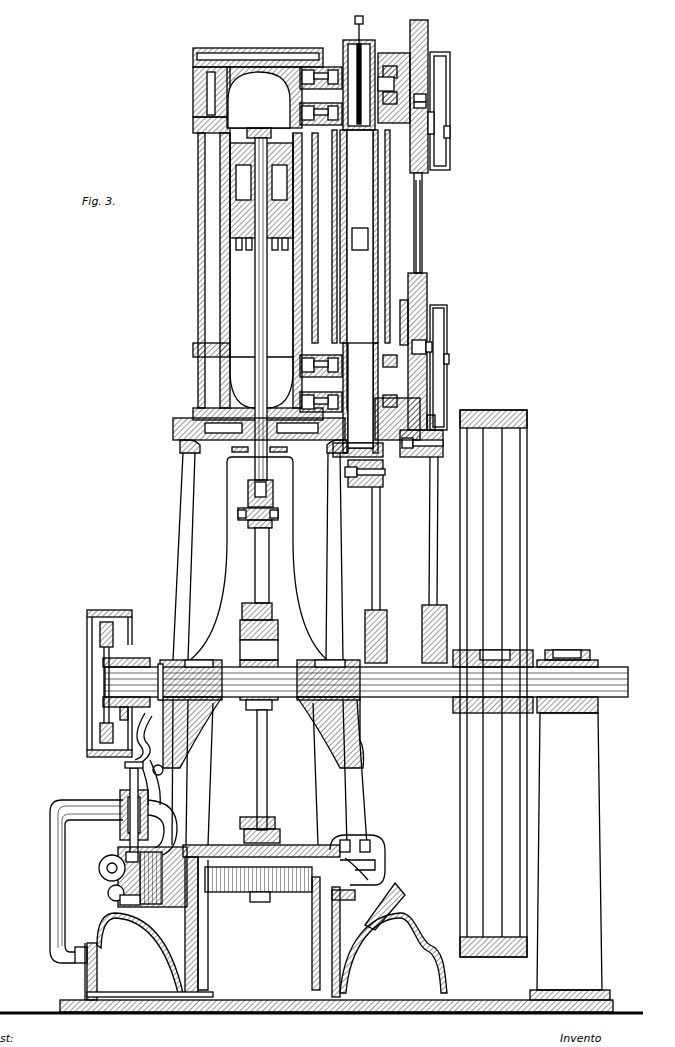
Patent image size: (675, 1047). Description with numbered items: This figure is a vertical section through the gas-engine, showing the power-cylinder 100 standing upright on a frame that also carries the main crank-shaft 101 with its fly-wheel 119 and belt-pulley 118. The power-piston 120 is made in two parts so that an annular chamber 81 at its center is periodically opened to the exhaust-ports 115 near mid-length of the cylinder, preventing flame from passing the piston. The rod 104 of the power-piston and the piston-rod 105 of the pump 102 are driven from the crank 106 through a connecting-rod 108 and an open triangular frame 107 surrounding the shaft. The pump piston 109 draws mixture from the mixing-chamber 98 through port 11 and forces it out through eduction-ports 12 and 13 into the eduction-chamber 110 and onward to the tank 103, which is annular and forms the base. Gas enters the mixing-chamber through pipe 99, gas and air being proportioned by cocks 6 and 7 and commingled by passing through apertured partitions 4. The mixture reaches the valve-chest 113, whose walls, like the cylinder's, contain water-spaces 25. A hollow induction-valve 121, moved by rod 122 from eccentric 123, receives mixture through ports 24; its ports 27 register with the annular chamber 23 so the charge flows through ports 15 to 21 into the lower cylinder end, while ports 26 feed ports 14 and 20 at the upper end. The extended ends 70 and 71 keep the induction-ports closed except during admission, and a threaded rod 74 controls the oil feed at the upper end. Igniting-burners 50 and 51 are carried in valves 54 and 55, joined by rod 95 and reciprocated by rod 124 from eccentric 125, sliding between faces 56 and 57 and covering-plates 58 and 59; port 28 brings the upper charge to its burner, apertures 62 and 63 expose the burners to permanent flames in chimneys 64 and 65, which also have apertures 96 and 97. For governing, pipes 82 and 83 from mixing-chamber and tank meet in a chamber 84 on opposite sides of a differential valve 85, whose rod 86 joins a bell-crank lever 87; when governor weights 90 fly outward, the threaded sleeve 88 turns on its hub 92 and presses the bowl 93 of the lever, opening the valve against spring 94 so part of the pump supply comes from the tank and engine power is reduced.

The diaphragms or partitions 4 is at (135, 907).
The cock or valve 6 is at (100, 868).
The cock or valve 7 is at (108, 893).
The port 11 is at (385, 906).
The eduction-port 12 is at (320, 845).
The eduction-port 13 is at (356, 866).
The port 14 is at (321, 107).
The port 15 is at (321, 396).
The induction-port 20 is at (321, 85).
The induction-port 21 is at (321, 374).
The annular chamber 23 is at (360, 396).
The ports 24 is at (361, 236).
The water-spaces 25 is at (262, 48).
The ports 26 is at (360, 124).
The ports 27 is at (357, 359).
The port 28 is at (386, 84).
The igniting-burner 50 is at (426, 98).
The igniting-burner 51 is at (426, 345).
The igniting valve 54 is at (428, 34).
The igniting valve 55 is at (427, 282).
The face 56 is at (395, 53).
The face 57 is at (427, 302).
The covering-plate 58 is at (438, 56).
The covering-plate 59 is at (445, 398).
The aperture 62 is at (434, 118).
The aperture 63 is at (432, 347).
The chimney 64 is at (446, 104).
The chimney 65 is at (447, 320).
The end of the induction-valve 70 is at (352, 50).
The end of the induction-valve 71 is at (358, 400).
The threaded rod 74 is at (361, 20).
The annular chamber 81 is at (261, 182).
The pipe 82 is at (178, 832).
The pipe 83 is at (50, 876).
The chamber 84 is at (130, 778).
The differential valve 85 is at (120, 793).
The rod 86 is at (125, 765).
The bell-crank lever 87 is at (151, 772).
The threaded sleeve 88 is at (140, 658).
The weights 90 is at (100, 634).
The hub 92 is at (160, 664).
The bowl 93 is at (170, 722).
The spring 94 is at (170, 740).
The rod 95 is at (422, 238).
The aperture 96 is at (450, 131).
The aperture 97 is at (449, 360).
The mixing-chamber 98 is at (158, 886).
The pipe 99 is at (122, 852).
The power-cylinder 100 is at (264, 237).
The main crank-shaft 101 is at (608, 667).
The pump 102 is at (269, 921).
The tank 103 is at (266, 956).
The rod of the power-piston 104 is at (262, 340).
The piston-rod of the pump 105 is at (268, 780).
The crank 106 is at (280, 630).
The open triangular frame 107 is at (366, 682).
The connecting-rod 108 is at (262, 574).
The piston 109 is at (258, 884).
The eduction-chamber 110 is at (372, 836).
The valve chest 113 is at (405, 215).
The exhaust-ports 115 is at (240, 250).
The belt-pulley 118 is at (108, 614).
The fly-wheel 119 is at (527, 548).
The power-piston 120 is at (232, 200).
The induction-valve 121 is at (360, 270).
The rod 122 is at (378, 560).
The eccentric 123 is at (388, 648).
The rod 124 is at (432, 528).
The eccentric 125 is at (422, 620).